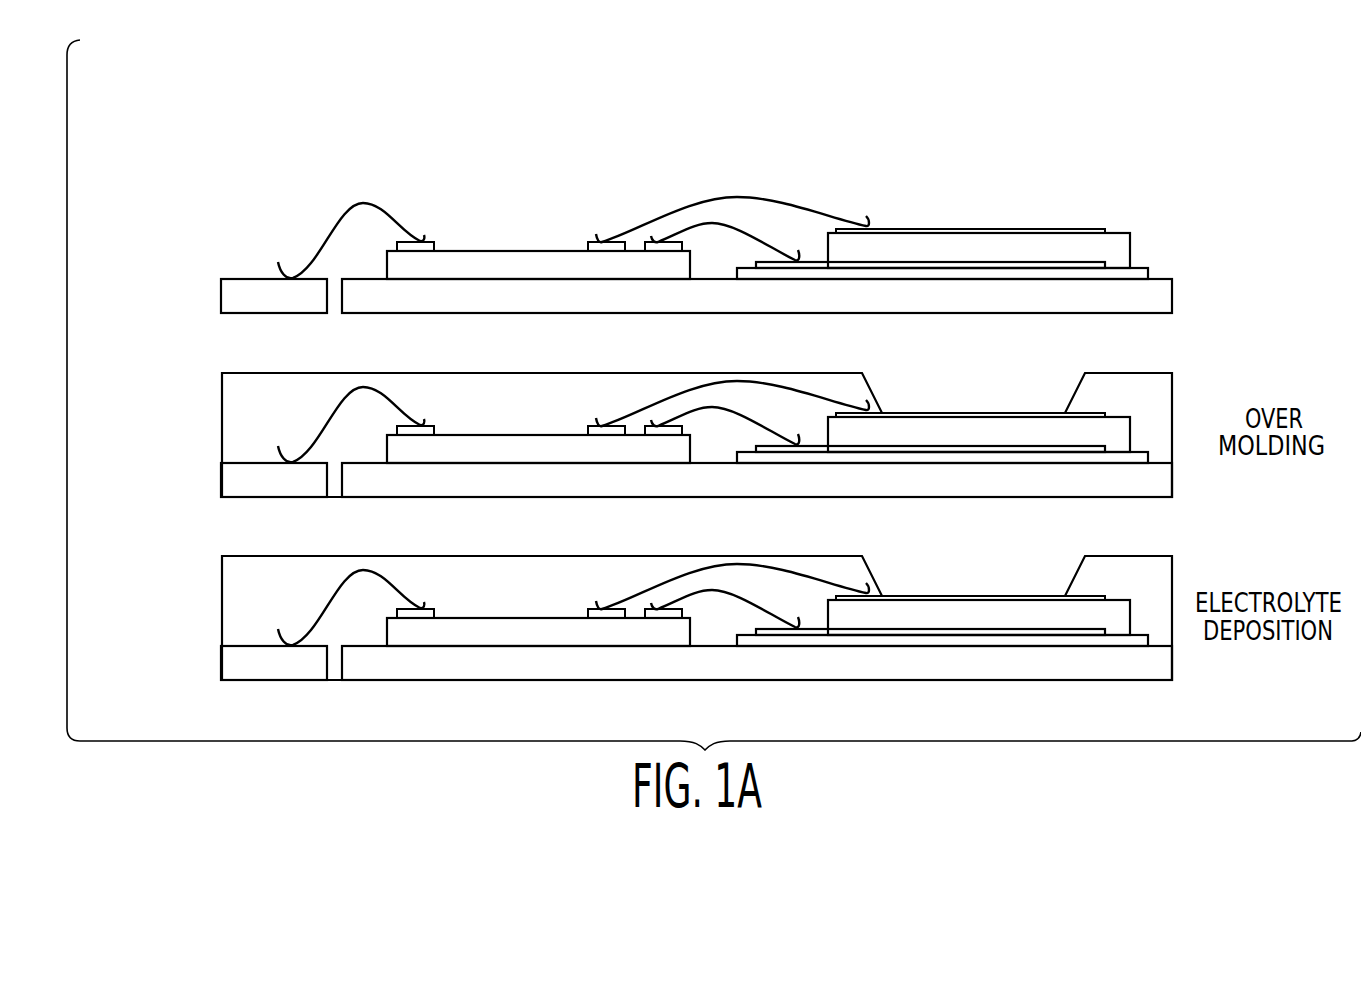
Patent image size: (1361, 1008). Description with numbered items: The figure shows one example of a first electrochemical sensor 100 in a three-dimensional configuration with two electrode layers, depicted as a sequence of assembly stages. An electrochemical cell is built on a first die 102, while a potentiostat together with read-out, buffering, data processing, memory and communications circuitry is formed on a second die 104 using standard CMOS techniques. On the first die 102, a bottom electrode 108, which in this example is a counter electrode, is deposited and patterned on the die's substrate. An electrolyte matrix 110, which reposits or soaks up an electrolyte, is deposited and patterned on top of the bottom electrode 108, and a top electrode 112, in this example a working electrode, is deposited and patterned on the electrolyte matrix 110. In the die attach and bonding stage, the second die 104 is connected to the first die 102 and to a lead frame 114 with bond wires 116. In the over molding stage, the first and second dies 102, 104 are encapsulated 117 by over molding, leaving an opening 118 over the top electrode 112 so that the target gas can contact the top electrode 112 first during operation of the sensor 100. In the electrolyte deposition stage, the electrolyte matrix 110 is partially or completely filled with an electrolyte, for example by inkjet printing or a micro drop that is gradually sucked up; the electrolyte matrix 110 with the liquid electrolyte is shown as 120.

The first electrochemical sensor 100 is at (173, 192).
The first die 102 is at (972, 192).
The second die 104 is at (537, 222).
The bottom electrode 108 is at (1105, 262).
The electrolyte matrix 110 is at (1077, 252).
The top electrode 112 is at (1038, 229).
The lead frame 114 is at (233, 292).
The bond wires 116 is at (355, 200).
The encapsulation 117 is at (1158, 393).
The opening 118 is at (1000, 378).
The electrolyte matrix with liquid electrolyte 120 is at (1120, 612).